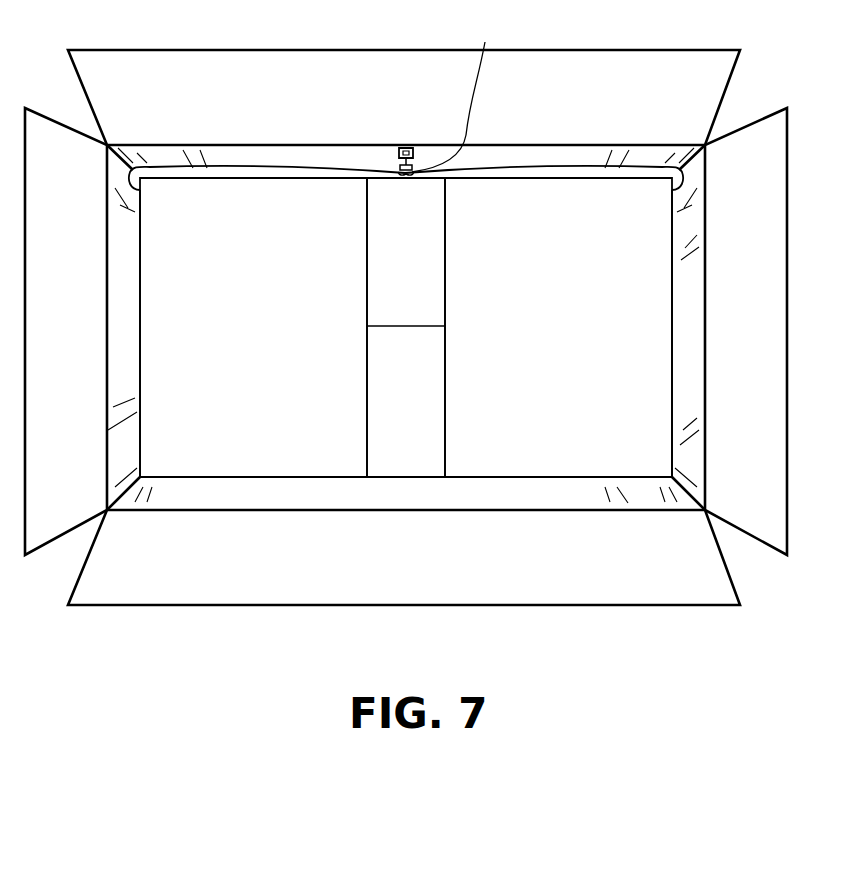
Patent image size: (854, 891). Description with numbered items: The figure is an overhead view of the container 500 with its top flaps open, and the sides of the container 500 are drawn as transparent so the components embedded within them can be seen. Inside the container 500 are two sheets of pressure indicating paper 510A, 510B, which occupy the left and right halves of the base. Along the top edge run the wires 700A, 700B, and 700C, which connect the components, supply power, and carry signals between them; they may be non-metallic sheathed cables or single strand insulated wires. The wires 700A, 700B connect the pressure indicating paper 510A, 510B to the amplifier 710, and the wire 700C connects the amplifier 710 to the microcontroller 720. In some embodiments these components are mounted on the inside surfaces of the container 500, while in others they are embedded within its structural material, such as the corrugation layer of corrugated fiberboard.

The container 500 is at (181, 50).
The pressure indicating paper 510A is at (272, 453).
The pressure indicating paper 510B is at (596, 453).
The wire 700A is at (543, 167).
The wire 700B is at (236, 166).
The wire 700C is at (400, 168).
The amplifier 710 is at (458, 95).
The microcontroller 720 is at (407, 147).